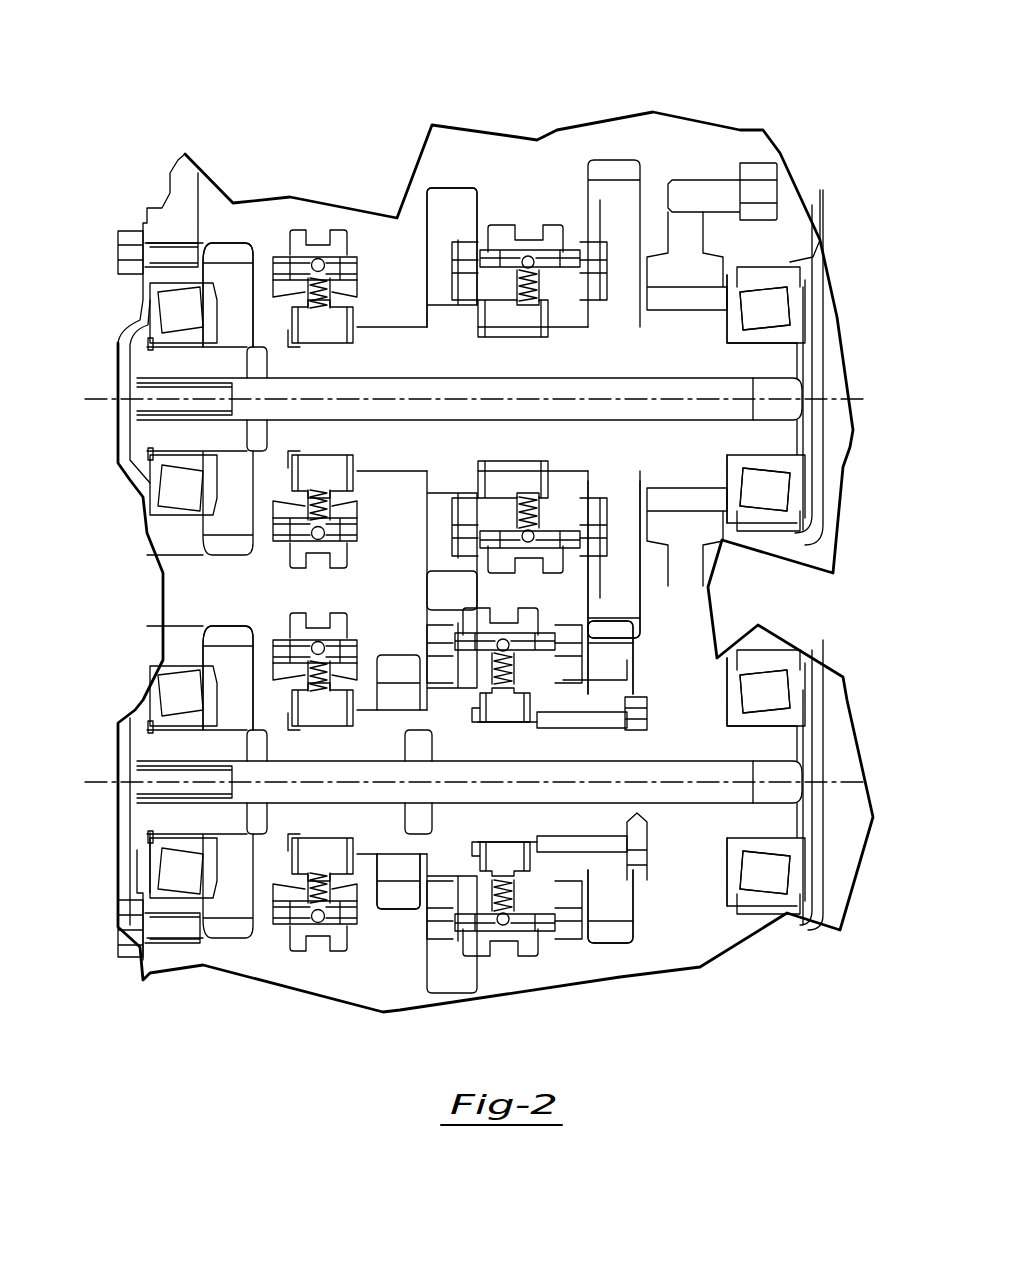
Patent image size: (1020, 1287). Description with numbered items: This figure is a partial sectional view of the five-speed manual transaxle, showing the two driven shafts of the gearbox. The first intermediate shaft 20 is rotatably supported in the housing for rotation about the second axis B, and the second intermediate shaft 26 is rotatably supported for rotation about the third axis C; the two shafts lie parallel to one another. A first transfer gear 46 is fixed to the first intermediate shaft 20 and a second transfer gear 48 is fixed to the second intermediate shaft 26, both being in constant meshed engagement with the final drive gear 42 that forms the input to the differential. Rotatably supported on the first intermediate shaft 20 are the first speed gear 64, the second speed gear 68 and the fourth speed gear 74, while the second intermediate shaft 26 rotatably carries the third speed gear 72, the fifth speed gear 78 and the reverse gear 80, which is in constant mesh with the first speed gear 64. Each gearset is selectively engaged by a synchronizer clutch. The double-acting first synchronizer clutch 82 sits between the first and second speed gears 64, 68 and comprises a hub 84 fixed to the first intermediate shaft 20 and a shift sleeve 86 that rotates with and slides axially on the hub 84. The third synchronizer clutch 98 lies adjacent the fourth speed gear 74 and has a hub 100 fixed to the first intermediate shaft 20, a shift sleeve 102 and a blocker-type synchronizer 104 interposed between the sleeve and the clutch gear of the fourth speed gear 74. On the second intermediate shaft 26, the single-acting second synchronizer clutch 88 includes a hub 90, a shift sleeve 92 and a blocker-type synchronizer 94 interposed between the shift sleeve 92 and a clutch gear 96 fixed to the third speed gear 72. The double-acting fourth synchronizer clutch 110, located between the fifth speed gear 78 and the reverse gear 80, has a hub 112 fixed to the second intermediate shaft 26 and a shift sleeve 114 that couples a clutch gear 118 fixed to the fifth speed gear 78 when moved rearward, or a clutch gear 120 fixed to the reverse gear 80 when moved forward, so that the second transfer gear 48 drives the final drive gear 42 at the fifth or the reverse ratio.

The first intermediate shaft 20 is at (763, 357).
The second intermediate shaft 26 is at (767, 823).
The final drive gear 42 is at (693, 263).
The first transfer gear 46 is at (705, 502).
The second transfer gear 48 is at (700, 710).
The first speed gear 64 is at (613, 580).
The second speed gear 68 is at (432, 235).
The third speed gear 72 is at (223, 903).
The fourth speed gear 74 is at (227, 257).
The fifth speed gear 78 is at (400, 900).
The reverse gear 80 is at (622, 657).
The first synchronizer clutch 82 is at (534, 221).
The hub 84 is at (507, 327).
The shift sleeve 86 is at (534, 202).
The second synchronizer clutch 88 is at (353, 937).
The hub 90 is at (438, 568).
The shift sleeve 92 is at (438, 568).
The blocker-type synchronizer 94 is at (438, 555).
The clutch gear 96 is at (267, 880).
The third synchronizer clutch 98 is at (343, 213).
The hub 100 is at (333, 323).
The shift sleeve 102 is at (320, 213).
The blocker-type synchronizer 104 is at (320, 213).
The fourth synchronizer clutch 110 is at (508, 924).
The hub 112 is at (508, 924).
The shift sleeve 114 is at (504, 924).
The clutch gear 118 is at (457, 867).
The clutch gear 120 is at (565, 877).
The second axis B is at (860, 398).
The third axis C is at (838, 782).